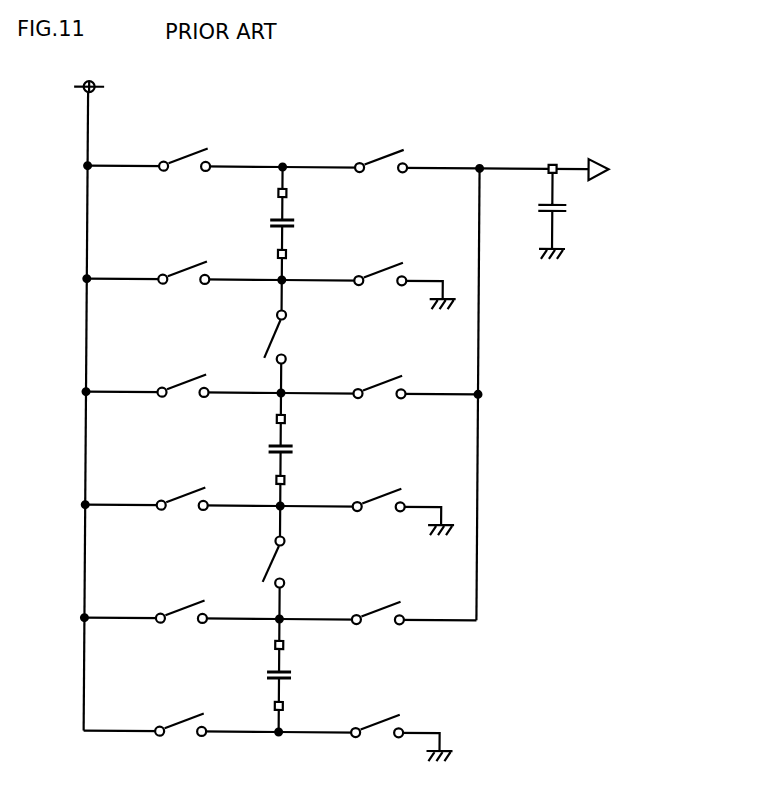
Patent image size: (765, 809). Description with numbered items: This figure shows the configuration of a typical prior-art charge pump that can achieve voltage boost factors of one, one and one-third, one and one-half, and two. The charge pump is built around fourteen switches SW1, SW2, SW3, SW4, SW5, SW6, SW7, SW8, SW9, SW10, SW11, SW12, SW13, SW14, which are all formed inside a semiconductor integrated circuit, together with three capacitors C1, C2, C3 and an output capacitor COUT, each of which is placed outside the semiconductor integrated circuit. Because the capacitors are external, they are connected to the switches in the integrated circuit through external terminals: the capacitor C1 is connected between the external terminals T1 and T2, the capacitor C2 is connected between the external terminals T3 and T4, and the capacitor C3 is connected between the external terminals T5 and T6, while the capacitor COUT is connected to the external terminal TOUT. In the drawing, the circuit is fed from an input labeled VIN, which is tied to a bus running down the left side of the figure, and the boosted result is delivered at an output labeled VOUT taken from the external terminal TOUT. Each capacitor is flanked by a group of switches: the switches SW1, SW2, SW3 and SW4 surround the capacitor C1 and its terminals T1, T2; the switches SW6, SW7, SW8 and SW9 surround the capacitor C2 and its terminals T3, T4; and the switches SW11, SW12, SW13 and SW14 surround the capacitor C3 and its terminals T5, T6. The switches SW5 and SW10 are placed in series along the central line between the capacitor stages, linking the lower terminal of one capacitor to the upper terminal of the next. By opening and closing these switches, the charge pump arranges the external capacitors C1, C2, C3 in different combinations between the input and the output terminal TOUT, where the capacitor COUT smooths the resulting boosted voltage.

The input voltage terminal VIN is at (89, 74).
The output voltage VOUT is at (630, 171).
The external terminal TOUT is at (552, 162).
The capacitor COUT is at (556, 213).
The switch SW1 is at (188, 151).
The switch SW2 is at (188, 264).
The switch SW3 is at (383, 151).
The switch SW4 is at (383, 264).
The switch SW5 is at (272, 336).
The switch SW6 is at (188, 377).
The switch SW7 is at (188, 490).
The switch SW8 is at (383, 377).
The switch SW9 is at (383, 490).
The switch SW10 is at (268, 562).
The switch SW11 is at (188, 603).
The switch SW12 is at (188, 716).
The switch SW13 is at (383, 603).
The switch SW14 is at (383, 716).
The external terminal T1 is at (277, 193).
The external terminal T2 is at (277, 254).
The external terminal T3 is at (277, 419).
The external terminal T4 is at (277, 480).
The external terminal T5 is at (277, 645).
The external terminal T6 is at (277, 706).
The capacitor C1 is at (269, 222).
The capacitor C2 is at (269, 448).
The capacitor C3 is at (269, 674).